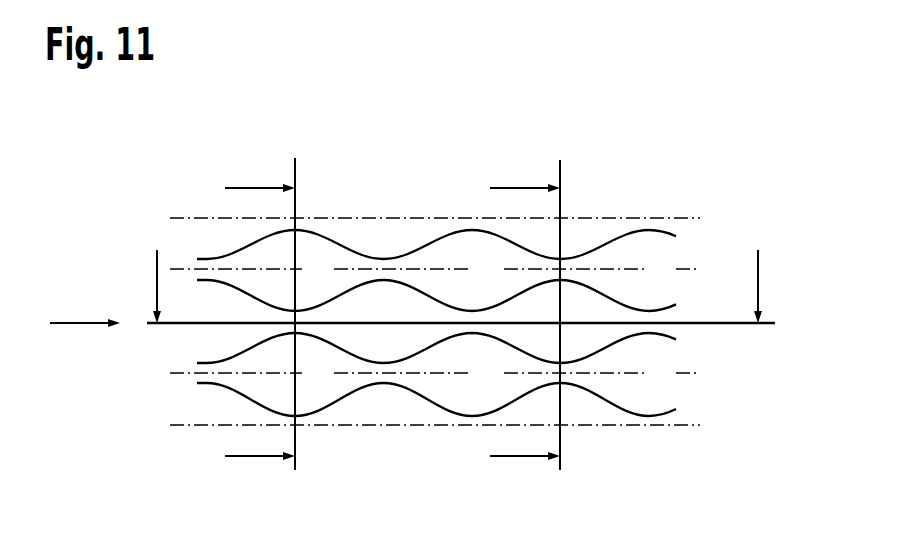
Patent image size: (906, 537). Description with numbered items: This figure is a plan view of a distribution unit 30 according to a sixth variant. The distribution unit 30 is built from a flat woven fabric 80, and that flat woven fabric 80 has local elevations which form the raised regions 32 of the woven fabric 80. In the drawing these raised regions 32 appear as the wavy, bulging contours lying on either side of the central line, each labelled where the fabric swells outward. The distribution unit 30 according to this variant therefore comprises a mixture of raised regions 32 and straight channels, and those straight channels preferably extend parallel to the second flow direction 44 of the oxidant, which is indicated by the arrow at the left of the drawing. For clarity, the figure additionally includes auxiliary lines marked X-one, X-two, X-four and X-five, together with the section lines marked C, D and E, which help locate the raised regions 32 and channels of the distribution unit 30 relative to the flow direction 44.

The distribution unit 30 is at (668, 168).
The raised regions 32 is at (436, 284).
The second flow direction 44 is at (72, 325).
The flat woven fabric 80 is at (355, 240).